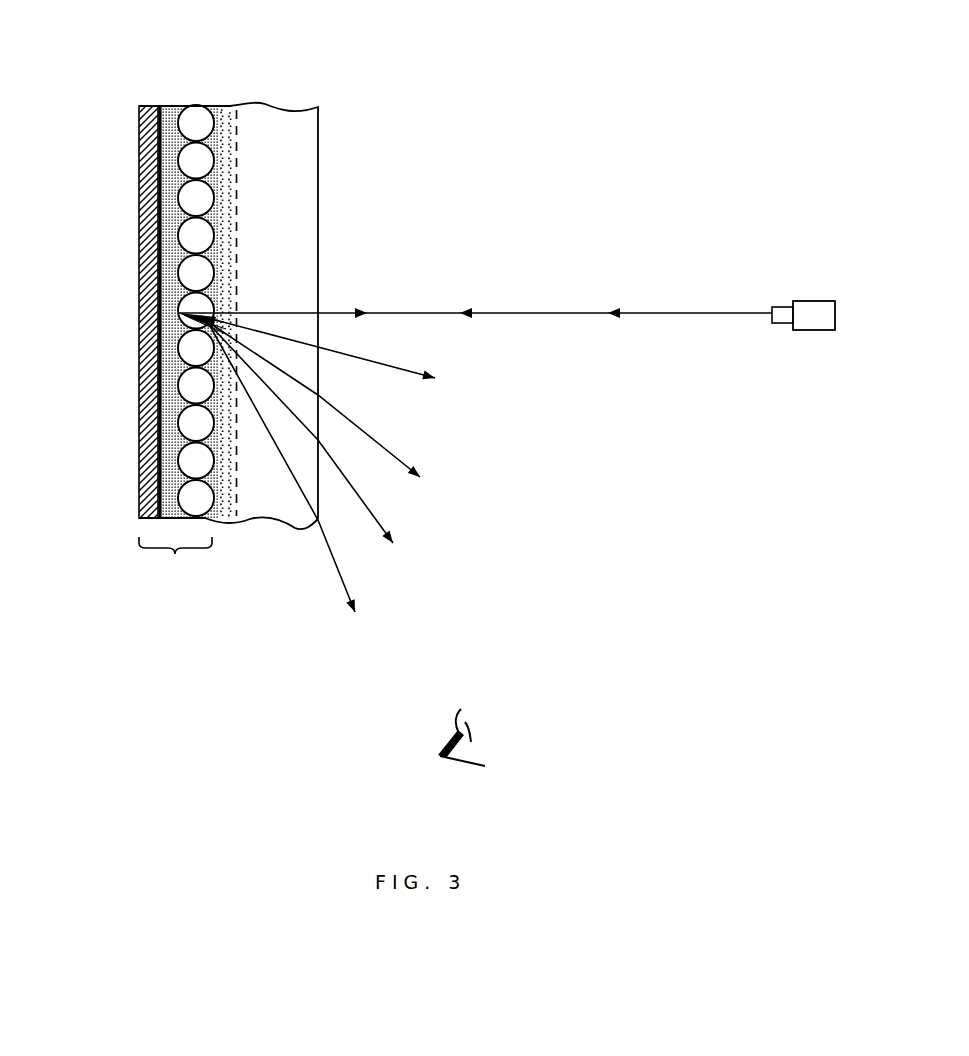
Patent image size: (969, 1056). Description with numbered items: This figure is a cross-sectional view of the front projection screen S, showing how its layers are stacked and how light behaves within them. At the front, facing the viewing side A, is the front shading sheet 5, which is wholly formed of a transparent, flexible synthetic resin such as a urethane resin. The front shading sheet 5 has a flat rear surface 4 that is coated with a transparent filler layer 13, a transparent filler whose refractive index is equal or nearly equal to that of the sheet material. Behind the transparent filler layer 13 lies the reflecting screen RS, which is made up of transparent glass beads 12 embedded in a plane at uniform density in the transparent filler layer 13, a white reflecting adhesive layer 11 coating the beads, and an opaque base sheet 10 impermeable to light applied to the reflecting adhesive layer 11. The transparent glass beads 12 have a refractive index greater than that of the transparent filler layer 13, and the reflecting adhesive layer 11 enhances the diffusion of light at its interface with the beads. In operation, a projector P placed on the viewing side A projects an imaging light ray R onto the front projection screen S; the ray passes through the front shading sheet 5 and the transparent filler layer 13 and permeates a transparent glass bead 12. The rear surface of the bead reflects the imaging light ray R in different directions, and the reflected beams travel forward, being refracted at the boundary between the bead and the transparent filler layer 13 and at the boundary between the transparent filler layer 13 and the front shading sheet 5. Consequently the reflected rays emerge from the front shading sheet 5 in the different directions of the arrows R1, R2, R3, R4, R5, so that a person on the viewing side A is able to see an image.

The base sheet 10 is at (139, 360).
The reflecting adhesive layer 11 is at (139, 277).
The transparent glass beads 12 is at (194, 198).
The transparent filler layer 13 is at (218, 118).
The rear surface 4 is at (237, 243).
The front shading sheet 5 is at (300, 160).
The front projection screen S is at (400, 211).
The projector P is at (812, 308).
The imaging light ray R is at (582, 313).
The reflected imaging light ray direction R1 is at (340, 313).
The reflected imaging light ray direction R2 is at (390, 365).
The reflected imaging light ray direction R3 is at (353, 425).
The reflected imaging light ray direction R4 is at (378, 520).
The reflected imaging light ray direction R5 is at (350, 588).
The viewing side A is at (655, 477).
The reflecting screen RS is at (175, 562).